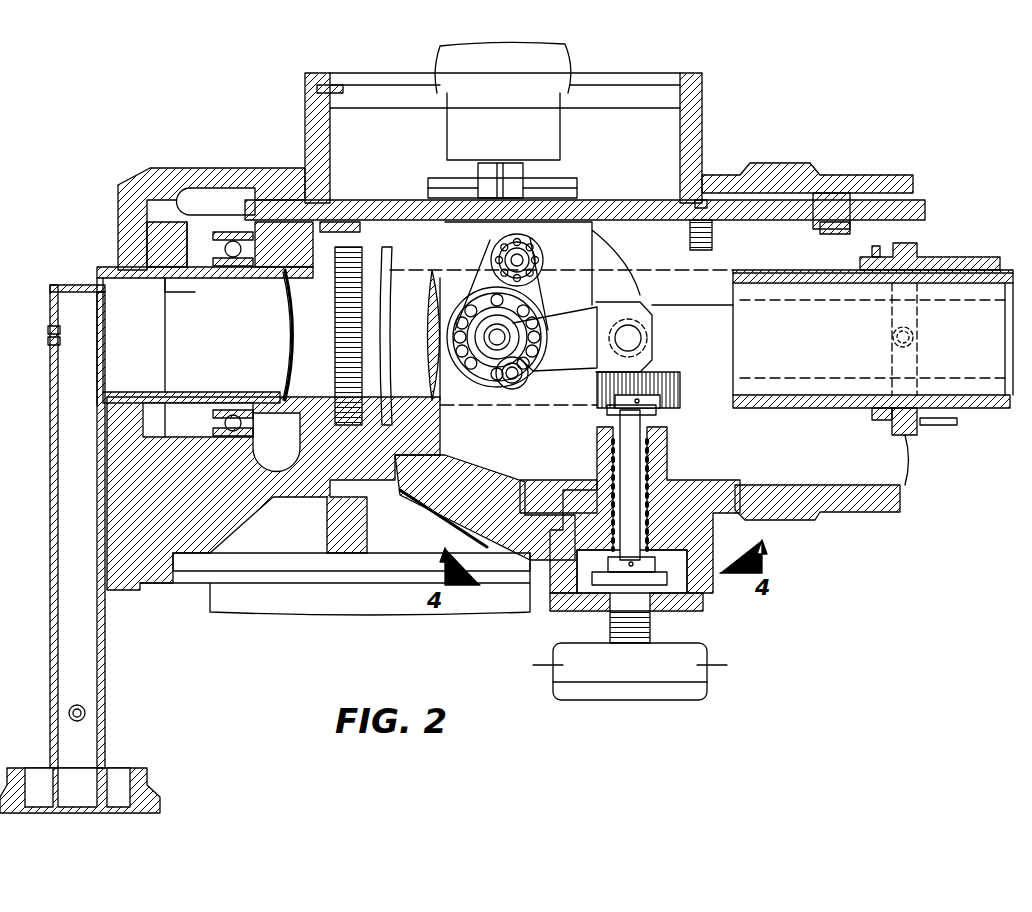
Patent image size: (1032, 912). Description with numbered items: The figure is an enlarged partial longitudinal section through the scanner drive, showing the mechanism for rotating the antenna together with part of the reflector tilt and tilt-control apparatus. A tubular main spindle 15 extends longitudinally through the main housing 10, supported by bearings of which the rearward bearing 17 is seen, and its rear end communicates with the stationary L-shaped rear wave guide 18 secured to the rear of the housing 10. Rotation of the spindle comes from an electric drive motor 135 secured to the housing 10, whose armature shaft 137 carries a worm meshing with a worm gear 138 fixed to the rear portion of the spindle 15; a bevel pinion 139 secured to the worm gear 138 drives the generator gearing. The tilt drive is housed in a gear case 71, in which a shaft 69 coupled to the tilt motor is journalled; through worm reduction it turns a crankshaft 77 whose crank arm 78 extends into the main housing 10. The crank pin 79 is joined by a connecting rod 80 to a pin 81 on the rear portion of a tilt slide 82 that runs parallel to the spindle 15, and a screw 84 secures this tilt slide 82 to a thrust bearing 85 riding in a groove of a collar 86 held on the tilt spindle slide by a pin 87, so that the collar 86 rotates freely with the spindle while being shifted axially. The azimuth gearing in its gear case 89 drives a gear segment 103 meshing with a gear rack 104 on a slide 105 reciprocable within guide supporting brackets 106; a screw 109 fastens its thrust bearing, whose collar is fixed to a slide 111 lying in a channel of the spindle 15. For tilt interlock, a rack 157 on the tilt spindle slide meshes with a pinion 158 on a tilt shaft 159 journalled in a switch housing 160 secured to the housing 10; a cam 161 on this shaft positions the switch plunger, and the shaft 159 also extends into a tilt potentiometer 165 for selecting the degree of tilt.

The main housing 10 is at (700, 165).
The tubular main spindle 15 is at (800, 283).
The rearward bearing 17 is at (230, 415).
The rear wave guide 18 is at (50, 545).
The shaft 69 is at (497, 256).
The gear case 71 is at (585, 300).
The crankshaft 77 is at (487, 340).
The crank arm 78 is at (492, 338).
The crank pin 79 is at (512, 385).
The connecting rod 80 is at (555, 366).
The pin 81 is at (641, 336).
The tilt slide 82 is at (715, 285).
The screw 84 is at (913, 340).
The thrust bearing 85 is at (898, 437).
The collar 86 is at (945, 256).
The pin 87 is at (948, 425).
The gear case 89 is at (560, 72).
The gear segment 103 is at (567, 185).
The gear rack 104 is at (430, 180).
The slide 105 is at (660, 200).
The guide supporting brackets 106 is at (293, 232).
The screw 109 is at (713, 240).
The slide 111 is at (798, 272).
The drive motor 135 is at (297, 612).
The armature shaft 137 is at (368, 535).
The worm gear 138 is at (335, 385).
The bevel pinion 139 is at (395, 258).
The rack 157 is at (675, 410).
The pinion 158 is at (612, 402).
The tilt shaft 159 is at (625, 450).
The switch housing 160 is at (700, 550).
The cam 161 is at (683, 578).
The tilt potentiometer 165 is at (717, 650).